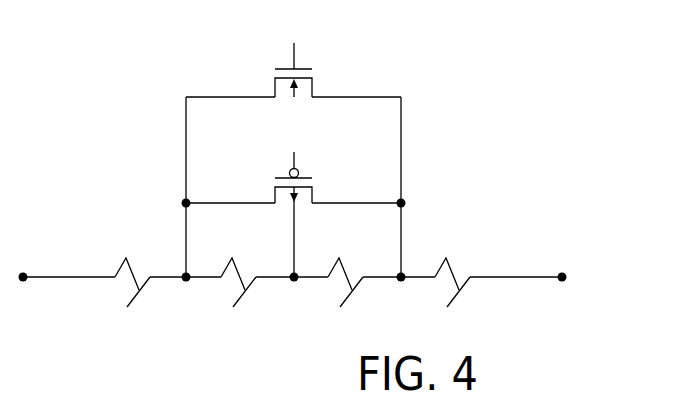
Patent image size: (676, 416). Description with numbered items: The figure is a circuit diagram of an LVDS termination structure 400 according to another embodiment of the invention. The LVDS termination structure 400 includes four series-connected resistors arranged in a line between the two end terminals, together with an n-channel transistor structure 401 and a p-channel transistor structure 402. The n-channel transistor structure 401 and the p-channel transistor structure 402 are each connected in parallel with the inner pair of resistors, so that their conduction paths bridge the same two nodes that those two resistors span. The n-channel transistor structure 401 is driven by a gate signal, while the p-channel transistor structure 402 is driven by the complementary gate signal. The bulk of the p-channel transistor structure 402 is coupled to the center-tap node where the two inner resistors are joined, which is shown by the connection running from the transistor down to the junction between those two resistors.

The LVDS termination structure 400 is at (128, 102).
The n-channel transistor structure 401 is at (312, 89).
The p-channel transistor structure 402 is at (312, 194).